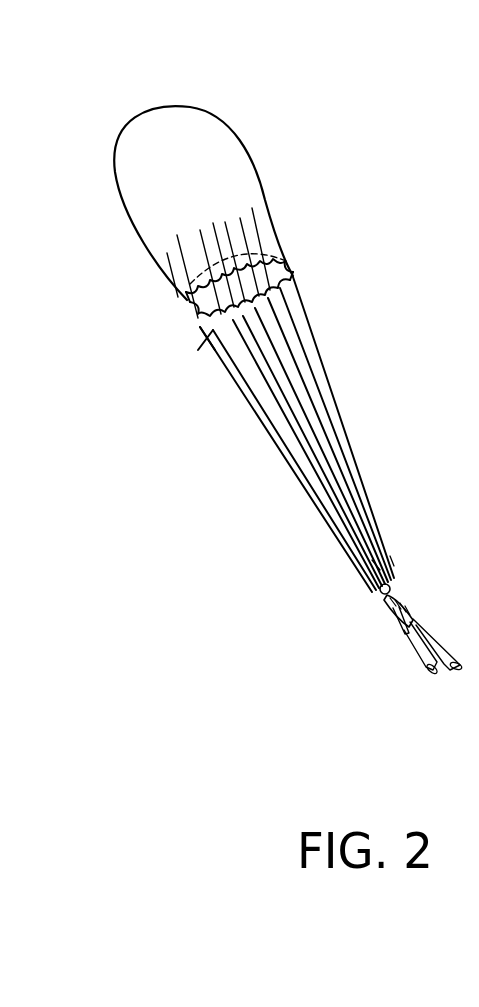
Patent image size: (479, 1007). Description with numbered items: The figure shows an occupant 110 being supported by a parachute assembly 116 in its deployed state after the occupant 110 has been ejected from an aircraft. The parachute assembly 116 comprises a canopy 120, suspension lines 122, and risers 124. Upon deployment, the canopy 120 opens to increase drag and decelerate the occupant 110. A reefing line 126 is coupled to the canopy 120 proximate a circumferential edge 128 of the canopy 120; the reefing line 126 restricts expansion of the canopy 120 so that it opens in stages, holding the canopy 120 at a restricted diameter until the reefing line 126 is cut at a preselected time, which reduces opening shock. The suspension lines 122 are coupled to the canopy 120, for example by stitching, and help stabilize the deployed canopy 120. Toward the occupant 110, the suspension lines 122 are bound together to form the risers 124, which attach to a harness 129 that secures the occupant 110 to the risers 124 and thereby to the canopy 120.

The occupant 110 is at (368, 605).
The parachute assembly 116 is at (143, 88).
The canopy 120 is at (203, 177).
The suspension lines 122 is at (318, 344).
The risers 124 is at (391, 547).
The reefing line 126 is at (210, 328).
The circumferential edge 128 is at (275, 257).
The harness 129 is at (396, 600).